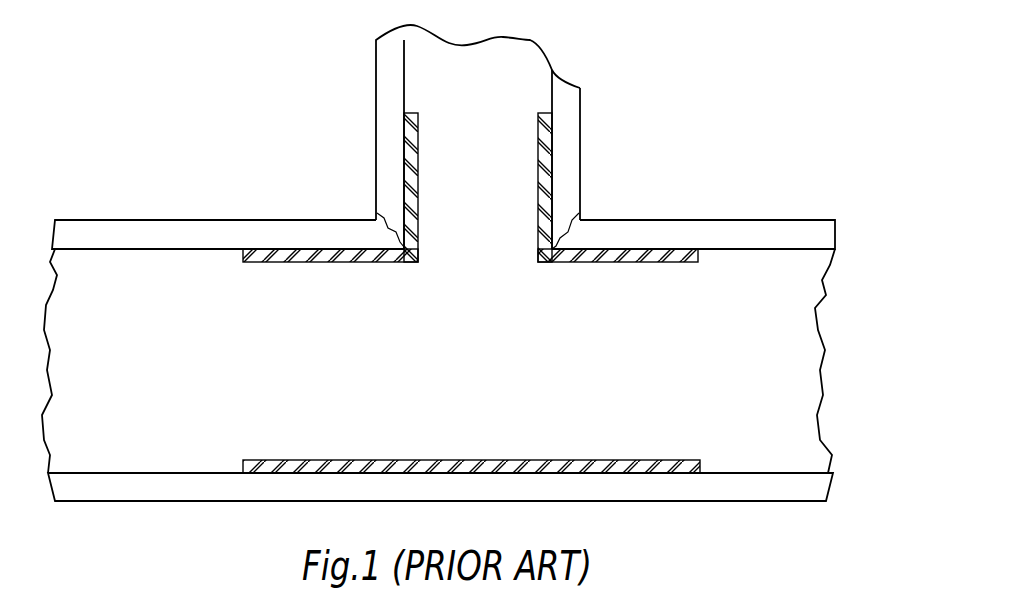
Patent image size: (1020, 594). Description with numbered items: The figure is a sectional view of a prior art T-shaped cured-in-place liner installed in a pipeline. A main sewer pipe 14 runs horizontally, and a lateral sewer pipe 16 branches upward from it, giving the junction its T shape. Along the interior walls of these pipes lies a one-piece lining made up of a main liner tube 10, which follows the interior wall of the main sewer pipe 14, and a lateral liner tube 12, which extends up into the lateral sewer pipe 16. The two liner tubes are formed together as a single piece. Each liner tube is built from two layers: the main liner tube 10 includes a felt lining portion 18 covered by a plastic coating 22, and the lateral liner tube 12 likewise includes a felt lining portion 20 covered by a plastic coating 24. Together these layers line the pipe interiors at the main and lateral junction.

The main liner tube 10 is at (666, 262).
The lateral liner tube 12 is at (405, 113).
The main sewer pipe 14 is at (113, 222).
The lateral sewer pipe 16 is at (580, 100).
The felt lining portion 18 is at (699, 250).
The felt lining portion 20 is at (548, 116).
The plastic coating 22 is at (598, 262).
The plastic coating 24 is at (541, 140).